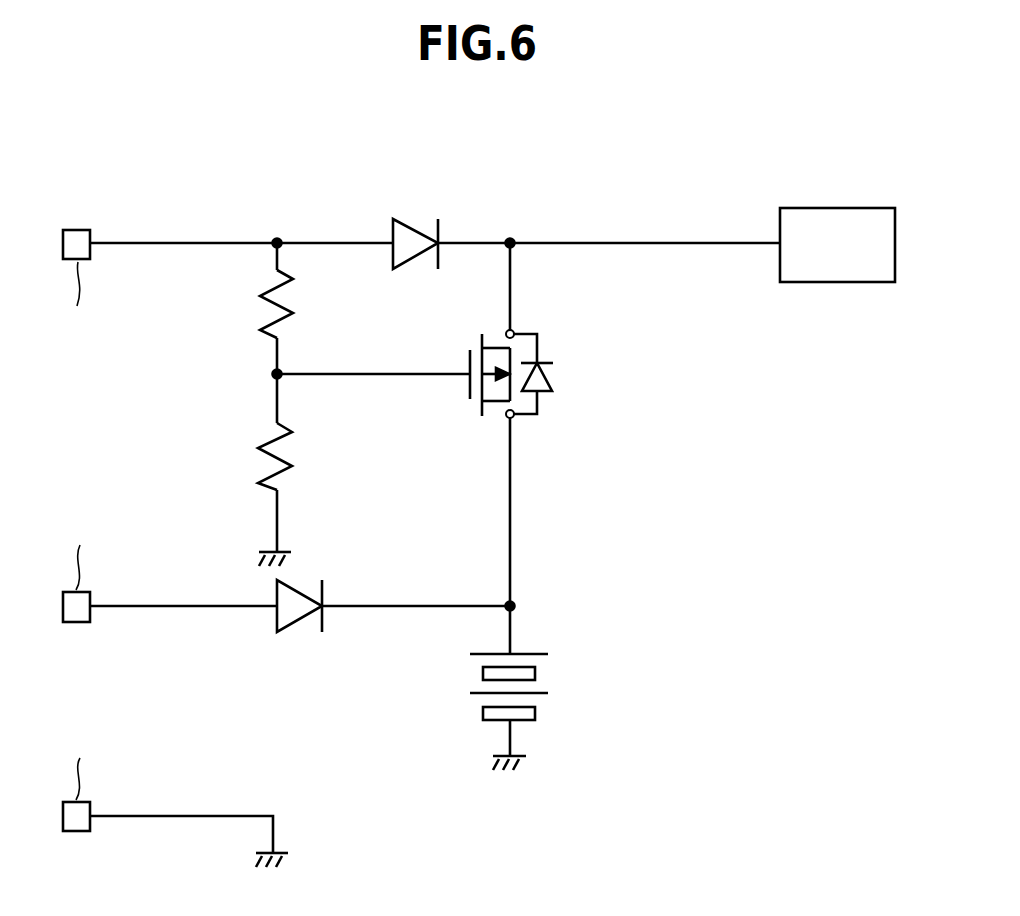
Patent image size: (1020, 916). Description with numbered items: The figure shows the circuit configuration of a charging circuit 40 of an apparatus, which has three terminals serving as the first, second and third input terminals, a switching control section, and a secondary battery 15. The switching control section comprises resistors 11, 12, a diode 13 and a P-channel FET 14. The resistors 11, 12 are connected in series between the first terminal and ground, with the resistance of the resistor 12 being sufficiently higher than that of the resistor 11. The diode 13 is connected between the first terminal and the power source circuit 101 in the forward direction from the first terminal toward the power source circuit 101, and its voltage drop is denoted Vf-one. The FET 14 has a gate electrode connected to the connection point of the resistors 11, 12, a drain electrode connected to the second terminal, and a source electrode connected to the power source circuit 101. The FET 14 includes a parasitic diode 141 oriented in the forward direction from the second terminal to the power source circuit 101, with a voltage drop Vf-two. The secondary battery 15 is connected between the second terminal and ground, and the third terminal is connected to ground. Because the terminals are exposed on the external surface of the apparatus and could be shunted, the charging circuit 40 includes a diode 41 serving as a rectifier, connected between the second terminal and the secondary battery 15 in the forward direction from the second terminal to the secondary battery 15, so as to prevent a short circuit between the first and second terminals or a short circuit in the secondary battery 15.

The resistor 11 is at (262, 300).
The resistor 12 is at (262, 455).
The diode 13 is at (408, 222).
The FET 14 is at (468, 359).
The parasitic diode 141 is at (540, 395).
The secondary battery 15 is at (533, 652).
The charging circuit 40 is at (590, 195).
The diode 41 is at (297, 625).
The power source circuit 101 is at (780, 228).